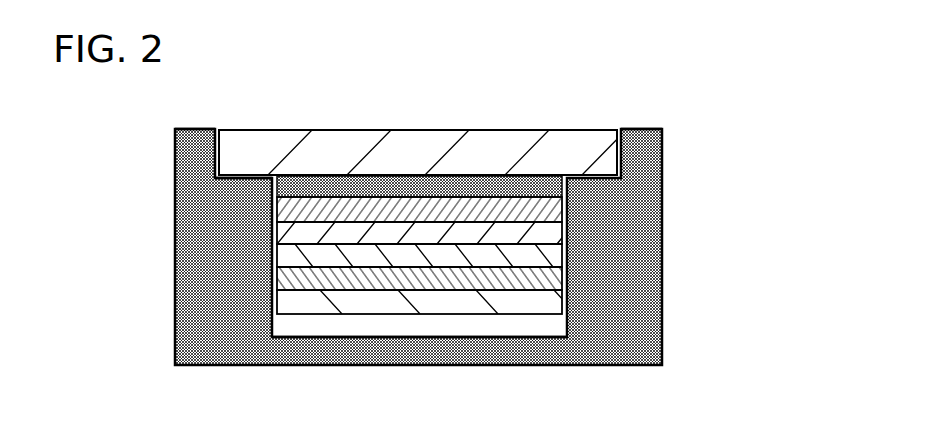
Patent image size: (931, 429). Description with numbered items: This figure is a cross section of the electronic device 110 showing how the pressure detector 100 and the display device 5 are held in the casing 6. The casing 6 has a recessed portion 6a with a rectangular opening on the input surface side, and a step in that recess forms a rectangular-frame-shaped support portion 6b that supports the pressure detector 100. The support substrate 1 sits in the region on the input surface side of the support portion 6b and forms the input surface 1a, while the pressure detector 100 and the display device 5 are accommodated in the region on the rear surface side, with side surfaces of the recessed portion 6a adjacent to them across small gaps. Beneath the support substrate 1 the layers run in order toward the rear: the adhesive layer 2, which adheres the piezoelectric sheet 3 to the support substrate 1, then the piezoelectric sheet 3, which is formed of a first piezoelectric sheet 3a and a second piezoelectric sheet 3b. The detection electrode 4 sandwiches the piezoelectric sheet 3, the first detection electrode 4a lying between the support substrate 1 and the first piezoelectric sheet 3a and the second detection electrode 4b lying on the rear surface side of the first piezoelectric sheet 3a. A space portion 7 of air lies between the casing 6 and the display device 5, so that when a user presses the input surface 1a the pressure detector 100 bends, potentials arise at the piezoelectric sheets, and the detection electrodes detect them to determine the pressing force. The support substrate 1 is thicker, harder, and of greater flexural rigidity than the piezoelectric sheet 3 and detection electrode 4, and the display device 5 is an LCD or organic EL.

The battery pack 110 is at (590, 60).
The pressure detector 100 is at (318, 103).
The support substrate 1 is at (595, 155).
The input surface 1a is at (430, 128).
The adhesive layer 2 is at (538, 190).
The piezoelectric sheet 3 is at (695, 227).
The first piezoelectric sheet 3a is at (548, 236).
The second piezoelectric sheet 3b is at (550, 260).
The detection electrode 4 is at (738, 205).
The first detection electrode 4a is at (572, 212).
The second detection electrode 4b is at (548, 280).
The display device 5 is at (530, 302).
The casing 6 is at (552, 350).
The recessed portion 6a is at (203, 153).
The support portion 6b is at (243, 176).
The space portion 7 is at (288, 323).